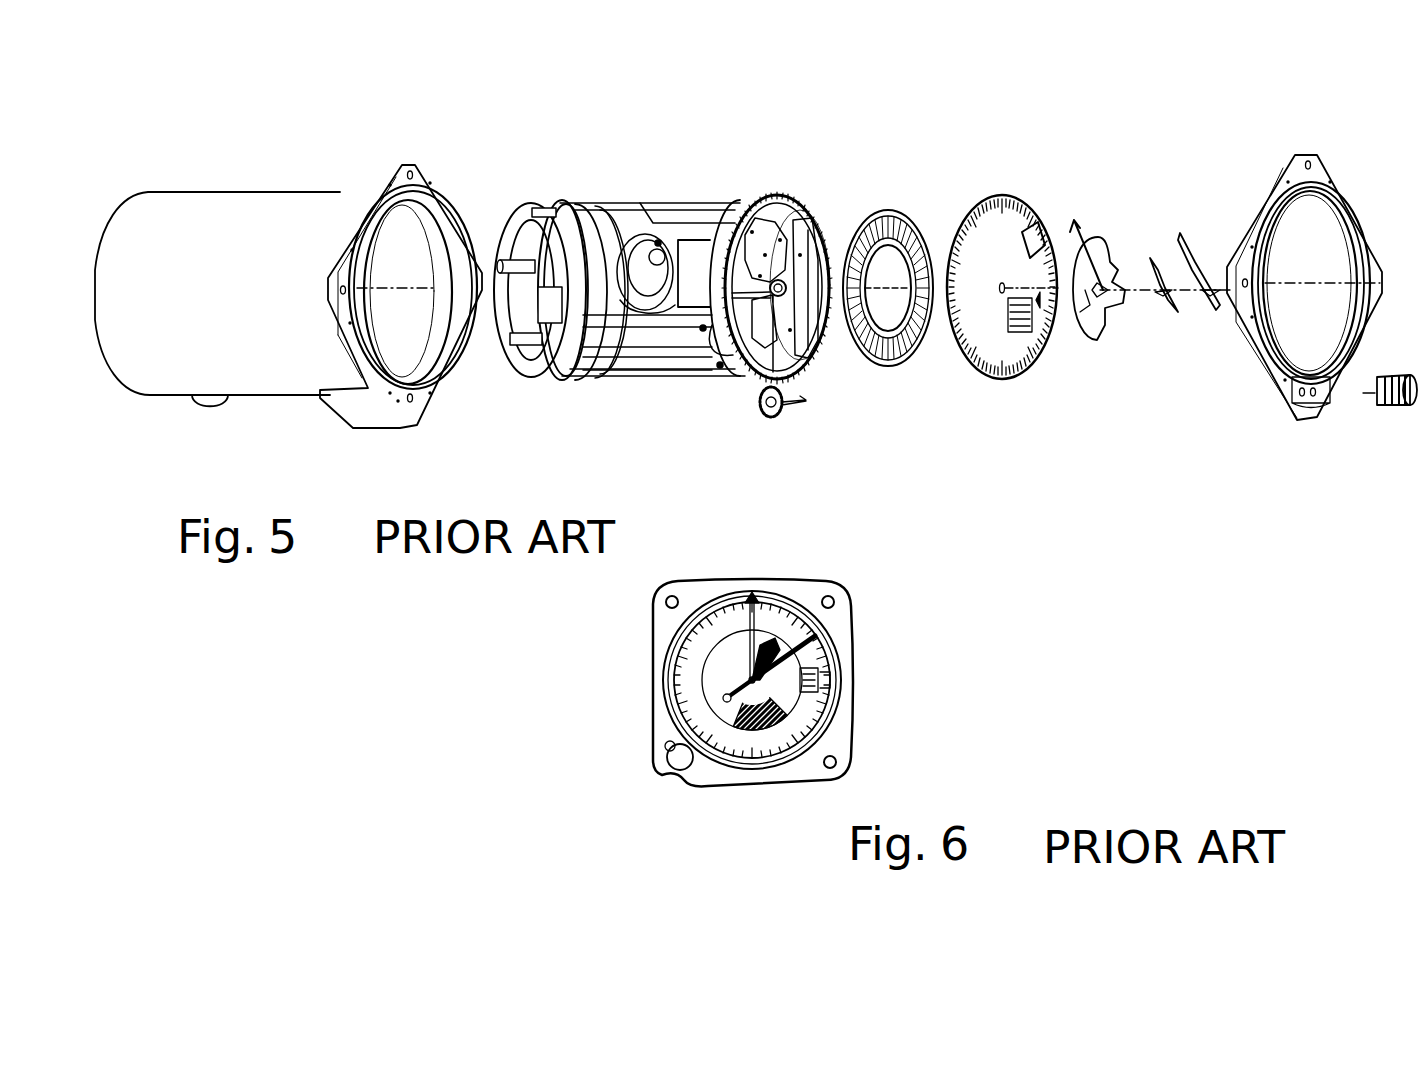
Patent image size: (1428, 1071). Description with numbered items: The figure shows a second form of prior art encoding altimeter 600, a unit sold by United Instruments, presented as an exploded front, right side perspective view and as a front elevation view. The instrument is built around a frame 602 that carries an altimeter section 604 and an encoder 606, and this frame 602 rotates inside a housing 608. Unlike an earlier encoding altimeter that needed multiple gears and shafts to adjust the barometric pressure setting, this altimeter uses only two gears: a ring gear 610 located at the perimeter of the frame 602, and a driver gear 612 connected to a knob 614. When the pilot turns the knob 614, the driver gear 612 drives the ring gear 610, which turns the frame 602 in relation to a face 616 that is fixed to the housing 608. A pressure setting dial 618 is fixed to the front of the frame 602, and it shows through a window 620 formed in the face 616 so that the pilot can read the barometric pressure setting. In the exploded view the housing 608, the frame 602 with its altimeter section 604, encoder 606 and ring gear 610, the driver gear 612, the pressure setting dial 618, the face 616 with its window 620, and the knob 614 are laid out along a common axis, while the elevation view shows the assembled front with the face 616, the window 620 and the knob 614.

In FIG. 5, the encoding altimeter 600 is at (497, 73).
In FIG. 6, the encoding altimeter 600 is at (630, 795).
In FIG. 5, the frame 602 is at (627, 210).
In FIG. 5, the altimeter section 604 is at (713, 227).
In FIG. 5, the encoder 606 is at (588, 212).
In FIG. 5, the housing 608 is at (232, 190).
In FIG. 6, the housing 608 is at (812, 582).
In FIG. 5, the ring gear 610 is at (805, 360).
In FIG. 5, the driver gear 612 is at (770, 420).
In FIG. 5, the knob 614 is at (1378, 403).
In FIG. 6, the knob 614 is at (662, 738).
In FIG. 5, the face 616 is at (1000, 193).
In FIG. 6, the face 616 is at (823, 632).
In FIG. 5, the pressure setting dial 618 is at (880, 210).
In FIG. 6, the pressure setting dial 618 is at (827, 688).
In FIG. 5, the window 620 is at (1037, 217).
In FIG. 6, the window 620 is at (825, 670).